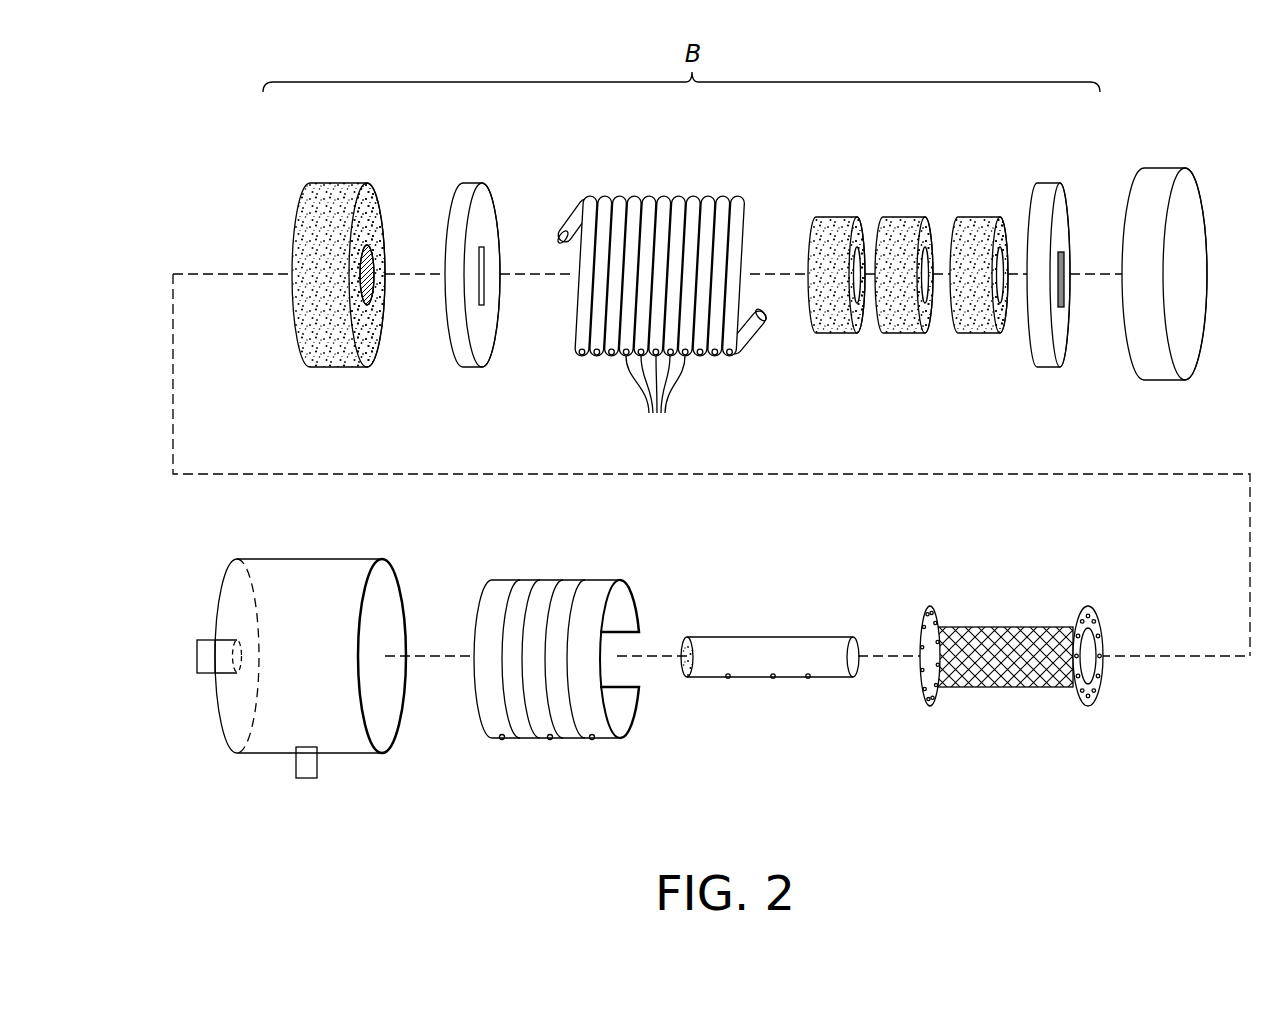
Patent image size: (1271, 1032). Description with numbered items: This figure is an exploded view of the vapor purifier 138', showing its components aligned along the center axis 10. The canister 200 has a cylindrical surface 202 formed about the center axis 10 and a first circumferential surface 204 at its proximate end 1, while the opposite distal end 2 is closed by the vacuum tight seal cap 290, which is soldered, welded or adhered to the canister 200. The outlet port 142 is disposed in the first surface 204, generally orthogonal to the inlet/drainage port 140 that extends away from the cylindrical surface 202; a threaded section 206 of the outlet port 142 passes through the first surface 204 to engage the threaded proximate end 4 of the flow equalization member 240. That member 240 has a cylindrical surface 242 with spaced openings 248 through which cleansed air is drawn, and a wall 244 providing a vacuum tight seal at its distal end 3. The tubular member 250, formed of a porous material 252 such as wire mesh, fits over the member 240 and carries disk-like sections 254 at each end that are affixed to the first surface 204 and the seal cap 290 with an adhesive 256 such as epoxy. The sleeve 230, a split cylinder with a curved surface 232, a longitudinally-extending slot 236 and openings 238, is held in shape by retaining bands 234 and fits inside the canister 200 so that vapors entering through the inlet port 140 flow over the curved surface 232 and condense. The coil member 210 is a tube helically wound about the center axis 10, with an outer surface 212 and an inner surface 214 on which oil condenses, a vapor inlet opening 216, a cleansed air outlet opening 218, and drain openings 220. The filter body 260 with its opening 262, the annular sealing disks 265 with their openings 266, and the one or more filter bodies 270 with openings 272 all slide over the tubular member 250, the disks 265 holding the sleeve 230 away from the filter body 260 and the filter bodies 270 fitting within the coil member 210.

The proximate end 1 is at (199, 590).
The distal end 2 is at (418, 624).
The distal end 3 is at (866, 624).
The proximate end 4 is at (675, 678).
The center axis 10 is at (1200, 660).
The vapor purifier 138' is at (695, 839).
The inlet/drainage port 140 is at (311, 766).
The outlet port 142 is at (195, 668).
The canister 200 is at (270, 680).
The cylindrical surface 202 is at (341, 580).
The first circumferential surface 204 is at (218, 722).
The threaded section 206 is at (234, 632).
The coil member 210 is at (656, 283).
The outer surface 212 is at (666, 205).
The inner surface 214 is at (561, 244).
The vapor inlet opening 216 is at (765, 316).
The cleansed air outlet opening 218 is at (556, 240).
The openings 220 is at (653, 400).
The sleeve 230 is at (608, 686).
The curved surface 232 is at (590, 590).
The retaining bands 234 is at (567, 590).
The longitudinally-extending slot 236 is at (650, 640).
The openings 238 is at (502, 740).
The flow equalization member 240 is at (770, 626).
The cylindrical surface 242 is at (800, 640).
The wall 244 is at (855, 678).
The spaced openings 248 is at (728, 678).
The tubular member 250 is at (1021, 637).
The porous material 252 is at (1015, 635).
The disk-like sections 254 is at (930, 700).
The adhesive 256 is at (933, 606).
The filter body 260 is at (363, 287).
The opening 262 is at (372, 262).
The annular sealing disks 265 is at (785, 278).
The opening 266 is at (481, 247).
The filter bodies 270 is at (908, 270).
The openings 272 is at (1000, 255).
The vacuum tight seal cap 290 is at (1151, 163).